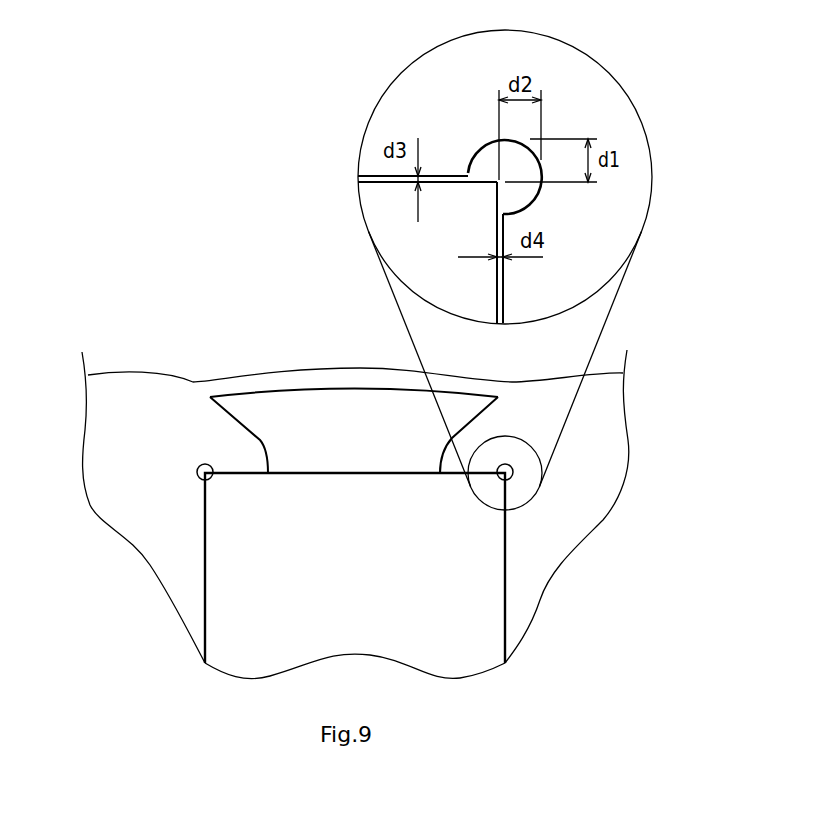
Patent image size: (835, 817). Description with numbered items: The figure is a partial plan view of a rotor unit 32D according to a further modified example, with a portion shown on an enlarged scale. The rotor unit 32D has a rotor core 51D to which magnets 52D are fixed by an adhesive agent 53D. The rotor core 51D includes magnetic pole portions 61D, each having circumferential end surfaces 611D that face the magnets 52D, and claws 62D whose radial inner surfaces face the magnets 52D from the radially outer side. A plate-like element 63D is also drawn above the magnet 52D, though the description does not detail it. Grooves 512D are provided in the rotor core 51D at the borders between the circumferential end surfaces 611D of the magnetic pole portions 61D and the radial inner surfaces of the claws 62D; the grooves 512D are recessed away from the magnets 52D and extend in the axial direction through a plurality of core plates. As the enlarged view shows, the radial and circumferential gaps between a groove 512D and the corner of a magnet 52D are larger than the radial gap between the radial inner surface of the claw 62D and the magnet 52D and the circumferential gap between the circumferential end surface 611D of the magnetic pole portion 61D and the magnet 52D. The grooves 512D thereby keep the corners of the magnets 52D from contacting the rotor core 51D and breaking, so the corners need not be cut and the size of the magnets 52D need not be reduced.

The rotor unit 32D is at (212, 260).
The rotor core 51D is at (132, 357).
The magnet 52D is at (385, 222).
The adhesive agent 53D is at (503, 279).
The magnetic pole portion 61D is at (588, 243).
The claw 62D is at (237, 448).
The cover plate 63D is at (343, 380).
The groove 512D is at (478, 152).
The circumferential end surface 611D is at (500, 303).